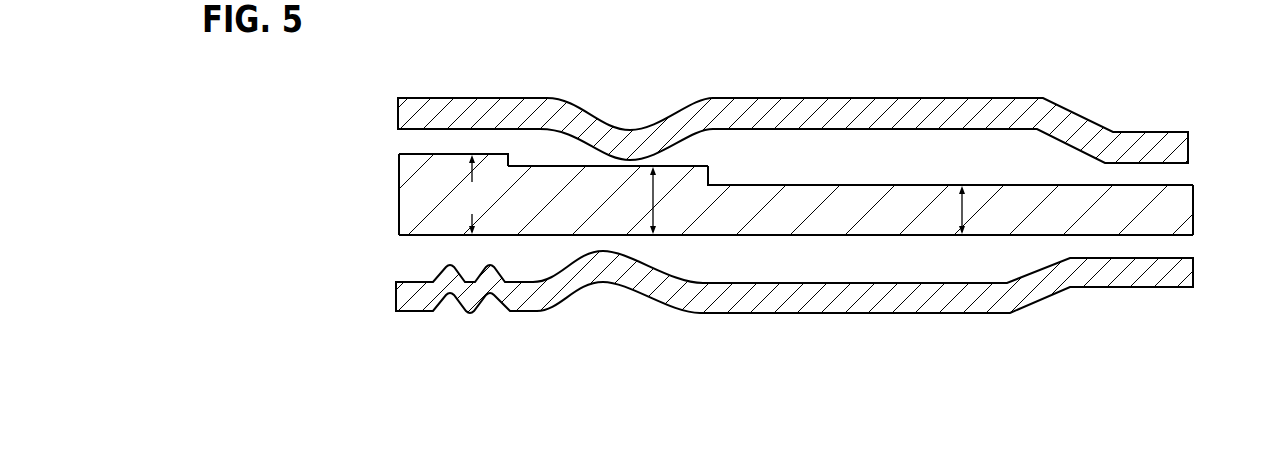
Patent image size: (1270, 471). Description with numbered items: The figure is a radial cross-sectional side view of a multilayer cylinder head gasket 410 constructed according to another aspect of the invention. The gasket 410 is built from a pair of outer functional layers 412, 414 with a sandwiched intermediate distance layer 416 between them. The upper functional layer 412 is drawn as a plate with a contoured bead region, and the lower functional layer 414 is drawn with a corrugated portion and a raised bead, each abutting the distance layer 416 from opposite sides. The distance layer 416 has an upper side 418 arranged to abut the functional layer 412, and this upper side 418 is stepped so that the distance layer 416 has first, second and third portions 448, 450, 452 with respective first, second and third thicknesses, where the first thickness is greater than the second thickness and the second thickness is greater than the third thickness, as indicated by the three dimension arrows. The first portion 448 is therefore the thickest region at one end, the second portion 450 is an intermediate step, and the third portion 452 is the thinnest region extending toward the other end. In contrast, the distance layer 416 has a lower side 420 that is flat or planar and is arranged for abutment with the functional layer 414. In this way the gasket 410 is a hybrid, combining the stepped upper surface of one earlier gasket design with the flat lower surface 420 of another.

The multilayer gasket 410 is at (967, 71).
The functional layer 412 is at (760, 97).
The functional layer 414 is at (704, 314).
The distance layer 416 is at (399, 193).
The upper side 418 is at (826, 185).
The lower side 420 is at (850, 236).
The first portion 448 is at (440, 152).
The second portion 450 is at (537, 166).
The third portion 452 is at (803, 185).